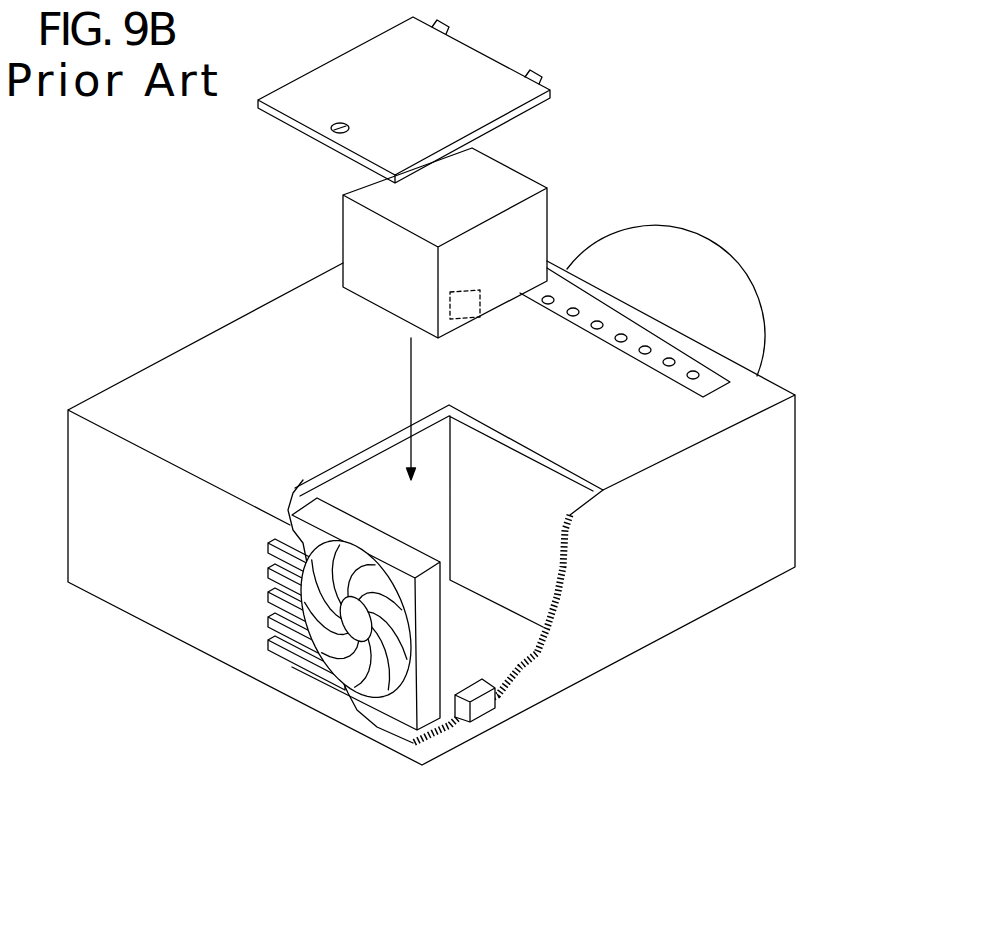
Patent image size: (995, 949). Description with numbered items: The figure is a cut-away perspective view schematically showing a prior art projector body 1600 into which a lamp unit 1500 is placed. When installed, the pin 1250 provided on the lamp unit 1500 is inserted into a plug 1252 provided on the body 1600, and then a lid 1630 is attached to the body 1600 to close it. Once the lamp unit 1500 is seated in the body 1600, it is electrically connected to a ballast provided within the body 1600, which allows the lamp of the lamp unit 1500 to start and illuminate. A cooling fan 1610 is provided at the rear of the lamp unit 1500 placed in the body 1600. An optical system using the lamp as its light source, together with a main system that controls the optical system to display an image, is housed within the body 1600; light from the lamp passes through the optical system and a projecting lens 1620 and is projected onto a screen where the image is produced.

The lid 1630 is at (311, 97).
The lamp unit 1500 is at (530, 233).
The pin 1250 is at (468, 315).
The projecting lens 1620 is at (707, 312).
The projector body 1600 is at (732, 618).
The cooling fan 1610 is at (390, 702).
The plug 1252 is at (482, 700).